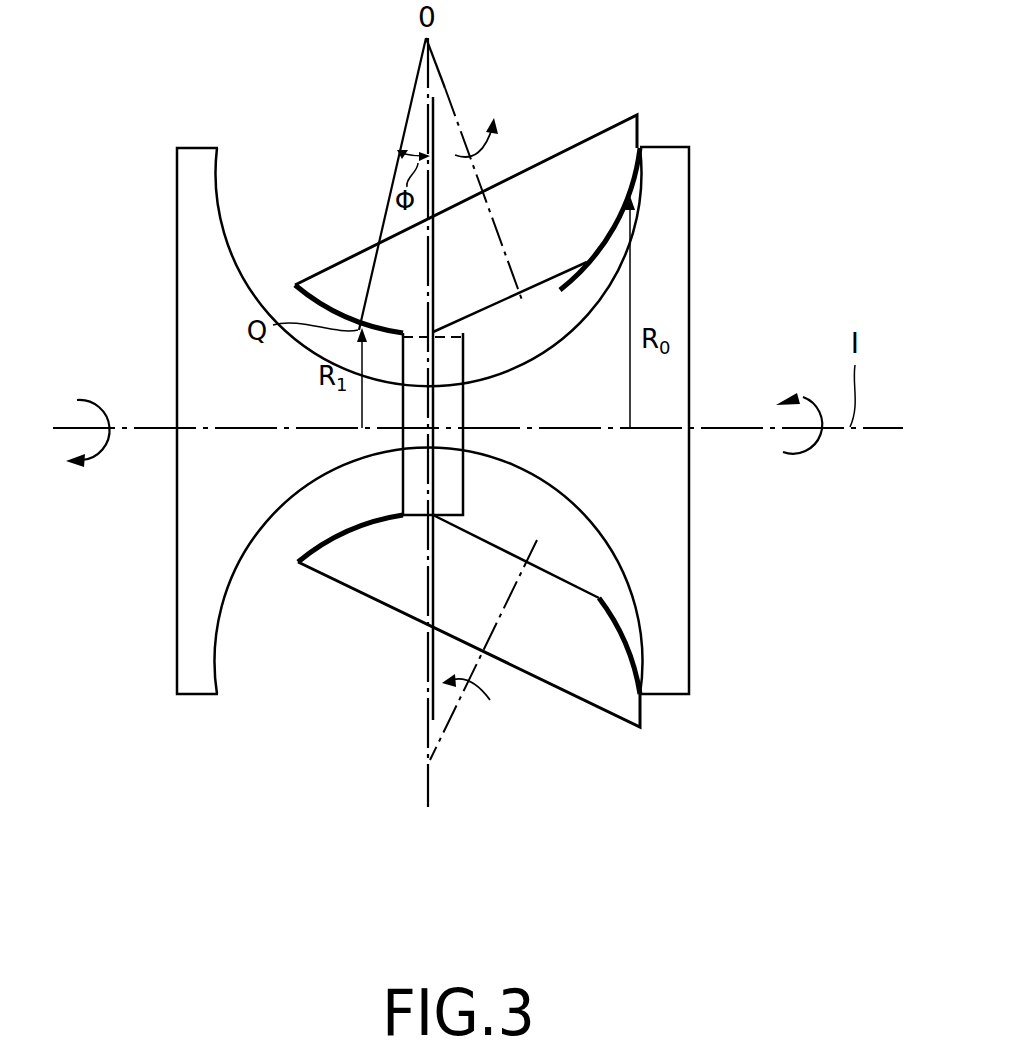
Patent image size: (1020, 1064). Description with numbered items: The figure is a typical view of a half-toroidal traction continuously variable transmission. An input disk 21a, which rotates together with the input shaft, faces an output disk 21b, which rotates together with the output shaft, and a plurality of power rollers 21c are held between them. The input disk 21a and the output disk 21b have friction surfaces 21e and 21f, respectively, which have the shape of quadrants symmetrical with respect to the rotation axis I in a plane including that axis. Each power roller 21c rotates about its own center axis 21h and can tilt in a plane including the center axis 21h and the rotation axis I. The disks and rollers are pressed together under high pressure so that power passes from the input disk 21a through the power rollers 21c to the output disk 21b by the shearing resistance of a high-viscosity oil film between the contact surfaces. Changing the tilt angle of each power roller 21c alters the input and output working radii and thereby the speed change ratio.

The input disk 21a is at (193, 697).
The output disk 21b is at (673, 697).
The power roller 21c is at (390, 239).
The friction surface 21e is at (229, 188).
The friction surface 21f is at (598, 262).
The center axis 21h is at (447, 86).